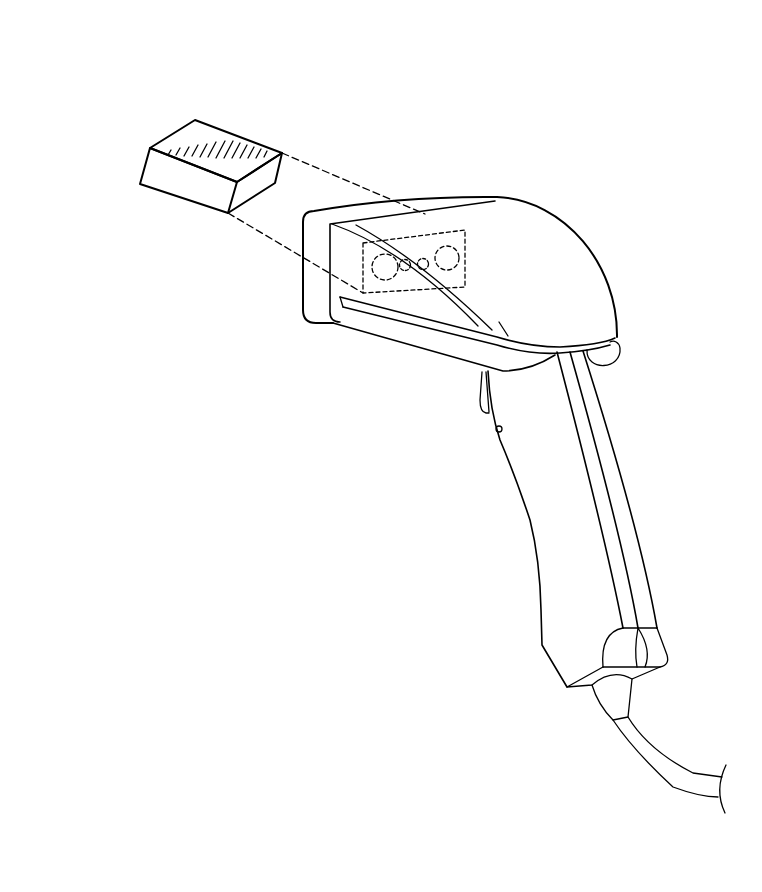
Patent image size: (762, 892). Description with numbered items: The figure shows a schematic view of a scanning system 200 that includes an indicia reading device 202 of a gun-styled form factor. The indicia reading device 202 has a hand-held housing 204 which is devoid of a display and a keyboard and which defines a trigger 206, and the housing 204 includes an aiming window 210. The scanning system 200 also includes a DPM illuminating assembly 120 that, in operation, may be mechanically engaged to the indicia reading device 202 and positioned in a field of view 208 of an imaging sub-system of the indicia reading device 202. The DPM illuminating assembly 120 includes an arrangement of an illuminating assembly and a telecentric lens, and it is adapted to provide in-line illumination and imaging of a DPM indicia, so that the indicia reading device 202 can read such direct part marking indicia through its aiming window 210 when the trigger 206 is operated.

The scanning system 200 is at (108, 107).
The DPM illuminating assembly 120 is at (143, 170).
The indicia reading device 202 is at (549, 315).
The hand-held housing 204 is at (614, 418).
The trigger 206 is at (478, 400).
The field of view 208 is at (439, 230).
The aiming window 210 is at (318, 287).